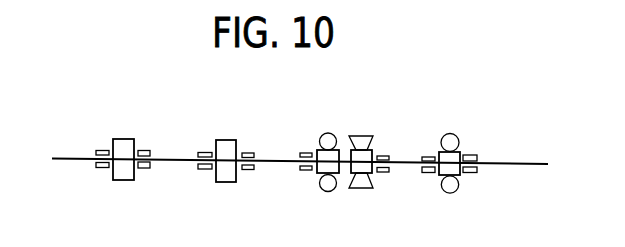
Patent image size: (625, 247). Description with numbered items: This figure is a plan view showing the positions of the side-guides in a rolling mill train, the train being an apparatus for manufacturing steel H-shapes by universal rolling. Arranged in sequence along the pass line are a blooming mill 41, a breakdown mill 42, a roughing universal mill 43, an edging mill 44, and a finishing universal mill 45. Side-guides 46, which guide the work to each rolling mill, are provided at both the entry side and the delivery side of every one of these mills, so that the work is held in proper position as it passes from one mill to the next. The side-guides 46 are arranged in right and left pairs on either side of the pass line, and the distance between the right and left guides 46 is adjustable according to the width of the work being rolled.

The blooming mill 41 is at (123, 142).
The breakdown mill 42 is at (223, 144).
The roughing universal mill 43 is at (330, 133).
The edging mill 44 is at (358, 140).
The finishing universal mill 45 is at (450, 137).
The side-guides 46 is at (143, 150).